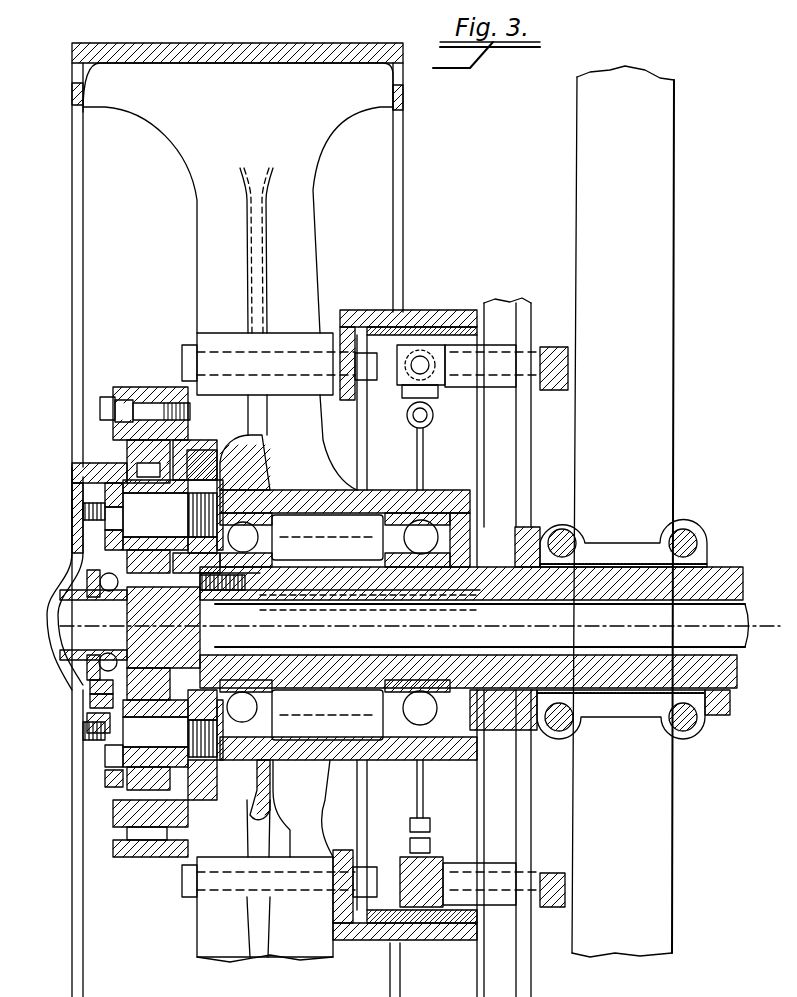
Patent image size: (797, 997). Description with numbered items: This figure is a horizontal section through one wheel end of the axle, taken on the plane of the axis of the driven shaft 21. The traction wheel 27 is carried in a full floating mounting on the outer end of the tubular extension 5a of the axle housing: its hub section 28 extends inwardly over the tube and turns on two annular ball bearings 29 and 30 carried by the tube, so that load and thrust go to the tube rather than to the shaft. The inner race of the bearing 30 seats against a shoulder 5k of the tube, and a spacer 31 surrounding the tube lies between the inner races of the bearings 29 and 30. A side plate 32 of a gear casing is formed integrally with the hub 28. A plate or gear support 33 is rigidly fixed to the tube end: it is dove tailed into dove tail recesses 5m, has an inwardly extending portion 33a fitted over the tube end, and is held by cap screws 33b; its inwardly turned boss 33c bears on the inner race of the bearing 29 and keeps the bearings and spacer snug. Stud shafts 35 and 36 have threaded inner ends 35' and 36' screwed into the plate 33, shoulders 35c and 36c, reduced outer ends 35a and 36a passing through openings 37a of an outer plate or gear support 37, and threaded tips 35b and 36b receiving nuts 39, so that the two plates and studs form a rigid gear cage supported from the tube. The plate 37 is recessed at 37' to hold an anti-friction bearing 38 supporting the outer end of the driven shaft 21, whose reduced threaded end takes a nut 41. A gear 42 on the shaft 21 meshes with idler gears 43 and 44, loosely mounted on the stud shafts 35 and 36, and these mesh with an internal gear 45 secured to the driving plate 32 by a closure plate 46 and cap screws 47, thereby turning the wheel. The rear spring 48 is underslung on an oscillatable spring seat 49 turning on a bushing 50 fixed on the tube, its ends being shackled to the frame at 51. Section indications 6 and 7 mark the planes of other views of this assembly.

The traction wheel 27 is at (192, 48).
The rear spring 48 is at (660, 305).
The hub section 28 is at (437, 500).
The screw-threaded section of stud shaft 35' is at (288, 442).
The anti-friction bearing 29 is at (250, 538).
The anti-friction bearing 30 is at (404, 541).
The spacer 31 is at (335, 565).
The inwardly turned boss 33c is at (256, 706).
The tubular extension of the axle housing 5a is at (742, 572).
The driven shaft 21 is at (735, 642).
The shoulder 5k is at (488, 562).
The oscillatable spring seat 49 is at (635, 552).
The bushing 50 is at (640, 722).
The shackle 51 is at (692, 717).
The side plate for gear casing 32 is at (188, 397).
The internal gear 45 is at (156, 398).
The cap screws or bolts 47 is at (105, 402).
The cap or closure plate 46 is at (127, 437).
The idler gear 43 is at (127, 467).
The nut 39 is at (105, 495).
The shoulder of stud shaft 35c is at (105, 490).
The screw-threaded outer end of stud shaft 35b is at (82, 508).
The reduced outer end of stud shaft 35a is at (112, 524).
The opening in plate 37a is at (112, 540).
The nut 41 is at (65, 603).
The anti-friction bearing 38 is at (100, 660).
The recess of plate 37' is at (64, 683).
The plate or gear support 37 is at (64, 705).
The screw-threaded outer end of stud shaft 36b is at (85, 740).
The reduced outer end of stud shaft 36a is at (110, 757).
The shoulder of stud shaft 36c is at (125, 790).
The idler gear 44 is at (125, 830).
The gear 42 is at (163, 627).
The stud shaft 35 is at (173, 526).
The stud shaft 36 is at (173, 729).
The plate or gear support 33 is at (222, 480).
The dove tail recess 5m is at (240, 578).
The inwardly extending portion of plate 33a is at (370, 597).
The cap screw 33b is at (366, 616).
The screw-threaded section of stud shaft 36' is at (348, 797).
The section line 7 is at (133, 380).
The section line 6 is at (195, 452).